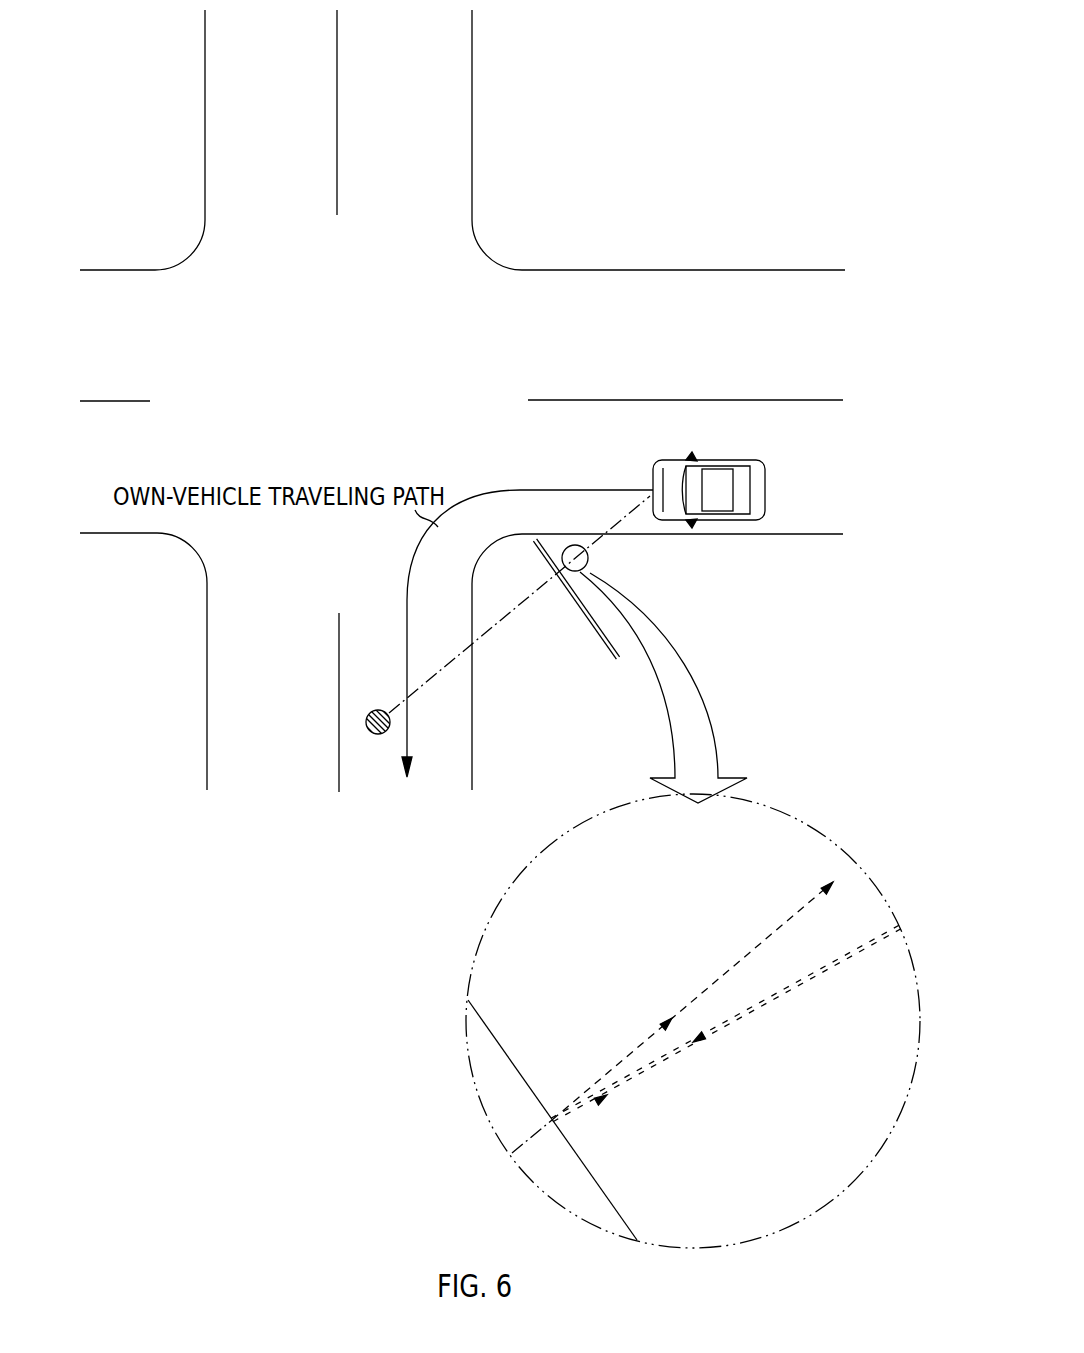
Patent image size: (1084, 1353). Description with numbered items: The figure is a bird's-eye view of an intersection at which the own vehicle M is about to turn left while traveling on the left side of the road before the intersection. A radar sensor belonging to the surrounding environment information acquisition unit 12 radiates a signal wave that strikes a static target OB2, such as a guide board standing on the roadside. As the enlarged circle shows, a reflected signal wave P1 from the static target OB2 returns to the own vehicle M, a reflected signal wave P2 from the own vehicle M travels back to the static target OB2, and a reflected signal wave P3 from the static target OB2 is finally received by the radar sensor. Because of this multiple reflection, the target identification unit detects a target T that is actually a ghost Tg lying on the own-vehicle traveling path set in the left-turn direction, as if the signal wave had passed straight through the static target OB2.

The own vehicle M is at (765, 490).
The surrounding environment information acquisition unit 12 is at (672, 520).
The static target OB2 is at (597, 641).
The target T is at (370, 767).
The ghost Tg is at (372, 735).
The reflected signal wave P1 is at (643, 1080).
The reflected signal wave P2 is at (835, 966).
The reflected signal wave P3 is at (750, 948).